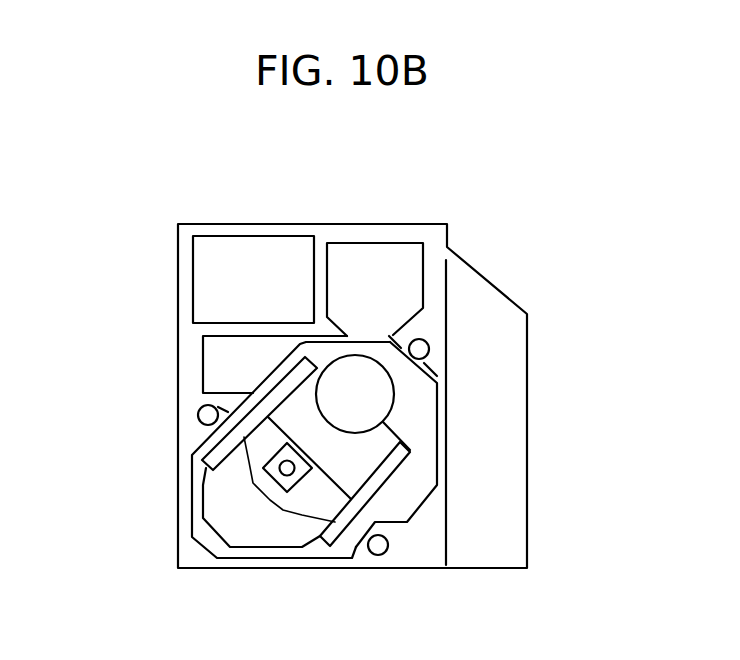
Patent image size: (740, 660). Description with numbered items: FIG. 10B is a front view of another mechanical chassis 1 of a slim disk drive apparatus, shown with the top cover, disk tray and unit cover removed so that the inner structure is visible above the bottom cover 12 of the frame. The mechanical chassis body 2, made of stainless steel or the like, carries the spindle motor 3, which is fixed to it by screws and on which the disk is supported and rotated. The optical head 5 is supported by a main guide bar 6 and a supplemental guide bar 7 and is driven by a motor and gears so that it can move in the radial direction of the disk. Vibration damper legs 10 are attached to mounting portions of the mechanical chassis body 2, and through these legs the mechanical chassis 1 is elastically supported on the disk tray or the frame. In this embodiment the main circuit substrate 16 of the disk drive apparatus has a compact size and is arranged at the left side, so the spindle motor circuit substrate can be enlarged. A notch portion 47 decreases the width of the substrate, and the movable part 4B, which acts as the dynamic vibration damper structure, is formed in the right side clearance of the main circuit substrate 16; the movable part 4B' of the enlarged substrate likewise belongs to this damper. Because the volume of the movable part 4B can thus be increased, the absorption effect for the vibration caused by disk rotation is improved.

The mechanical chassis 1 is at (511, 412).
The mechanical chassis body 2 is at (251, 450).
The spindle motor 3 is at (448, 394).
The movable part 4B is at (221, 364).
The movable part 4B' is at (375, 255).
The optical head 5 is at (287, 535).
The main guide bar 6 is at (387, 524).
The supplemental guide bar 7 is at (259, 322).
The vibration damper legs 10 is at (346, 479).
The bottom cover 12 is at (386, 396).
The main circuit substrate 16 is at (207, 279).
The notch portion 47 is at (364, 261).